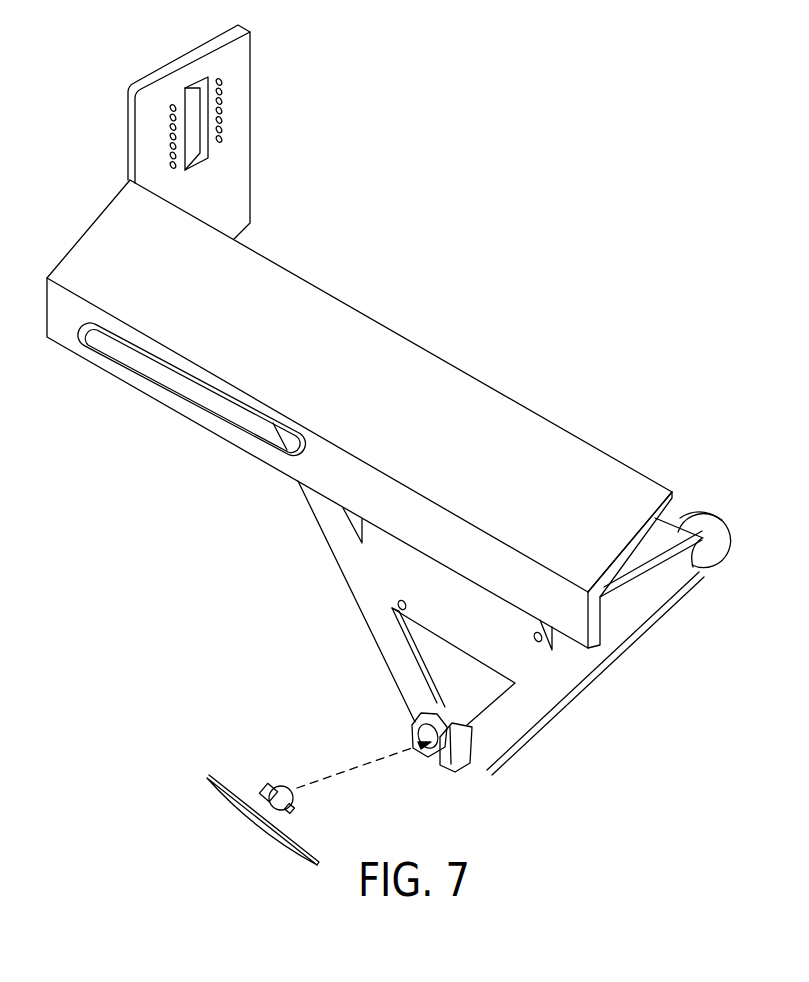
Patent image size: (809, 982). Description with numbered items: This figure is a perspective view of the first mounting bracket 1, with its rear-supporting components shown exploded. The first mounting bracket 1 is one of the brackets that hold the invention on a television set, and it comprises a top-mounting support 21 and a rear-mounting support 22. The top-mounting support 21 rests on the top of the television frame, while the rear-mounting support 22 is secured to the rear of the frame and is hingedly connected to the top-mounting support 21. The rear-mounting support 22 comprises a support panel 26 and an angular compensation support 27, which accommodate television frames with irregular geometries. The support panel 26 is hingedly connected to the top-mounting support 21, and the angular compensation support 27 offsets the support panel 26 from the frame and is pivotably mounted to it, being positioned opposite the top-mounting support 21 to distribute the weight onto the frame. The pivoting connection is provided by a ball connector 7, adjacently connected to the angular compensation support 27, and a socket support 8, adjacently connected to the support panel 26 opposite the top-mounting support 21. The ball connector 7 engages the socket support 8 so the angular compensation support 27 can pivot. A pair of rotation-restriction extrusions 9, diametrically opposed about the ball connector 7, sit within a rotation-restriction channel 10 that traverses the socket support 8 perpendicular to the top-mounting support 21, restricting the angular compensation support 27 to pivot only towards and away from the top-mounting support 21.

The first mounting bracket 1 is at (672, 290).
The ball connector 7 is at (290, 792).
The socket support 8 is at (458, 760).
The pair of rotation-restriction extrusions 9 is at (267, 788).
The rotation-restriction channel 10 is at (442, 732).
The top-mounting support 21 is at (702, 522).
The rear-mounting support 22 is at (690, 730).
The support panel 26 is at (612, 635).
The angular compensation support 27 is at (240, 808).